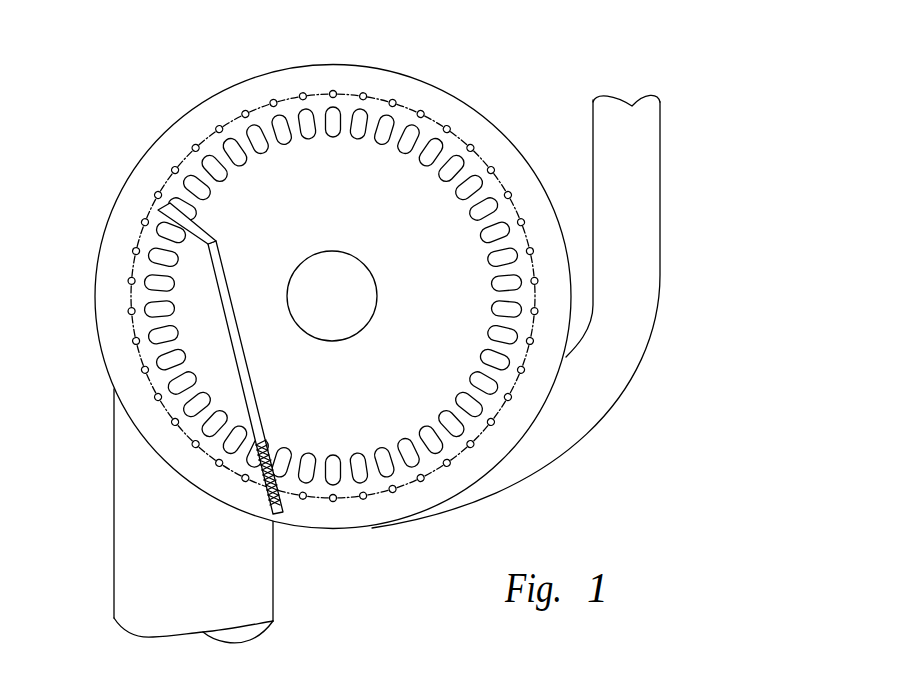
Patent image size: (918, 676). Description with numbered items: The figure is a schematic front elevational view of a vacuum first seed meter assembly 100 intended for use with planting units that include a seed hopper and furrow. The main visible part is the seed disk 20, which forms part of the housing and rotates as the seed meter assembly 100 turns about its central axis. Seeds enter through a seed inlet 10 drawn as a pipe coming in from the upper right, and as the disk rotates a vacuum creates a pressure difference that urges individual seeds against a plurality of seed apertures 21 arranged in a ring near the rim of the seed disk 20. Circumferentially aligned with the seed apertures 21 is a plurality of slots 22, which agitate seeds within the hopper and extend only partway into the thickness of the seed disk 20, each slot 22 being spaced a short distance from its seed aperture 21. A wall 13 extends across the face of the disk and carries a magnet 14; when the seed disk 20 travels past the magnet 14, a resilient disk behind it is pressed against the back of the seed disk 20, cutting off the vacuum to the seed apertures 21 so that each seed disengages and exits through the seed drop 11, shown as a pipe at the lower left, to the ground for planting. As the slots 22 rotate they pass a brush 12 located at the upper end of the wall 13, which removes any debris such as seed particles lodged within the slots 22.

The first seed meter assembly 100 is at (420, 64).
The seed inlet 10 is at (660, 188).
The seed drop 11 is at (114, 580).
The brush 12 is at (207, 240).
The wall 13 is at (247, 372).
The magnet 14 is at (265, 486).
The seed disk 20 is at (510, 133).
The seed apertures 21 is at (424, 113).
The slots 22 is at (426, 432).